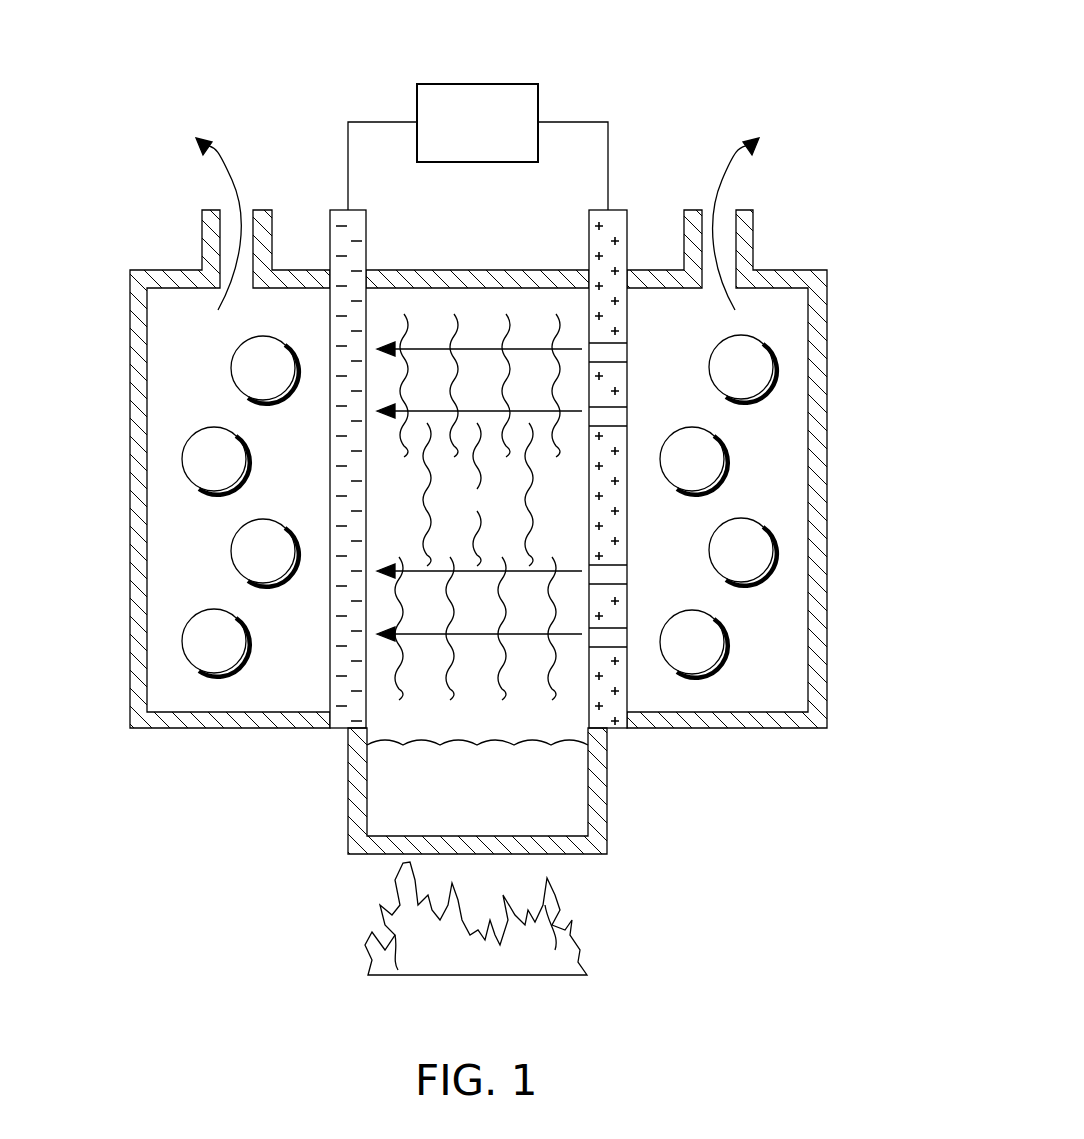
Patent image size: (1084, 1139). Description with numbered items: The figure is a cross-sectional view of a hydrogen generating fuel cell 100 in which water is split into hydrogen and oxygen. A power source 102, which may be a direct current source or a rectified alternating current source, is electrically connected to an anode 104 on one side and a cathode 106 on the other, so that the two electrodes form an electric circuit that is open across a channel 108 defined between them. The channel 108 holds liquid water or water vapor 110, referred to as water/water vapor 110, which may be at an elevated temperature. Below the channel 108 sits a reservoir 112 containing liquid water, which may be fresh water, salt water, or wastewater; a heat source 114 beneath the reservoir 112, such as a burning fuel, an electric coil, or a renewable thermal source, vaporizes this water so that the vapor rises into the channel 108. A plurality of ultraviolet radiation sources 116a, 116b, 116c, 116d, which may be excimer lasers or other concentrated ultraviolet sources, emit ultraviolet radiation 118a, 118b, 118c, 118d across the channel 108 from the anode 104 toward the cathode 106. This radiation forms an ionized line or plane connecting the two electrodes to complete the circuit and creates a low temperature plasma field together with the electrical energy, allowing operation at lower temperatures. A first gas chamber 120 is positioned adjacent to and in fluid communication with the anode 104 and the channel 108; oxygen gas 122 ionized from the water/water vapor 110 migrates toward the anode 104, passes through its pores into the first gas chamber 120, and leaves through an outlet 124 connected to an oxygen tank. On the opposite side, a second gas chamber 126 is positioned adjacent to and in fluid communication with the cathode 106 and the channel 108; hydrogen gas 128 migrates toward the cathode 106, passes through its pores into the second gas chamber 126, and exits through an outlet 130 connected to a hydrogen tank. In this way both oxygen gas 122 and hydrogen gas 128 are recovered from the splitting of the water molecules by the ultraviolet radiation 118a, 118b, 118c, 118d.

The hydrogen generating fuel cell 100 is at (876, 190).
The power source 102 is at (478, 84).
The anode 104 is at (627, 231).
The cathode 106 is at (330, 228).
The channel 108 is at (502, 515).
The water/water vapor 110 is at (478, 310).
The reservoir 112 is at (498, 810).
The heat source 114 is at (540, 918).
The ultraviolet radiation source 116a is at (617, 355).
The ultraviolet radiation source 116b is at (617, 416).
The ultraviolet radiation source 116c is at (617, 576).
The ultraviolet radiation source 116d is at (618, 640).
The ultraviolet radiation 118a is at (458, 347).
The ultraviolet radiation 118b is at (522, 408).
The ultraviolet radiation 118c is at (410, 566).
The ultraviolet radiation 118d is at (427, 662).
The first gas chamber 120 is at (692, 550).
The oxygen gas 122 is at (773, 370).
The outlet 124 is at (722, 216).
The second gas chamber 126 is at (212, 550).
The hydrogen gas 128 is at (182, 458).
The outlet 130 is at (234, 218).